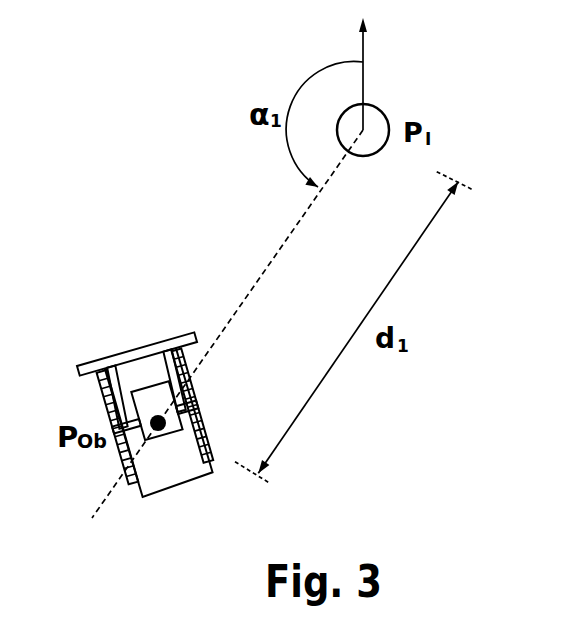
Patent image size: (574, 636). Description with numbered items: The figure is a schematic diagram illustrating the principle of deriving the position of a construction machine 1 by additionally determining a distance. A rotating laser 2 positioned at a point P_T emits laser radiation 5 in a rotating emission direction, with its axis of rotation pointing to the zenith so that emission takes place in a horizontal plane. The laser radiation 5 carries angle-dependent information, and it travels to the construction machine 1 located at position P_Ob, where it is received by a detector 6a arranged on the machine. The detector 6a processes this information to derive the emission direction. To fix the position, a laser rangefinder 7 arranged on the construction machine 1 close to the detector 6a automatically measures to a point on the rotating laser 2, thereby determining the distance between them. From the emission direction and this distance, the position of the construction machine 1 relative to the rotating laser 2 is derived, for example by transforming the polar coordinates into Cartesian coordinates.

The construction machine 1 is at (104, 320).
The rotating laser 2 is at (373, 128).
The laser radiation 5 is at (263, 273).
The detector 6a is at (168, 421).
The laser rangefinder 7 is at (165, 414).